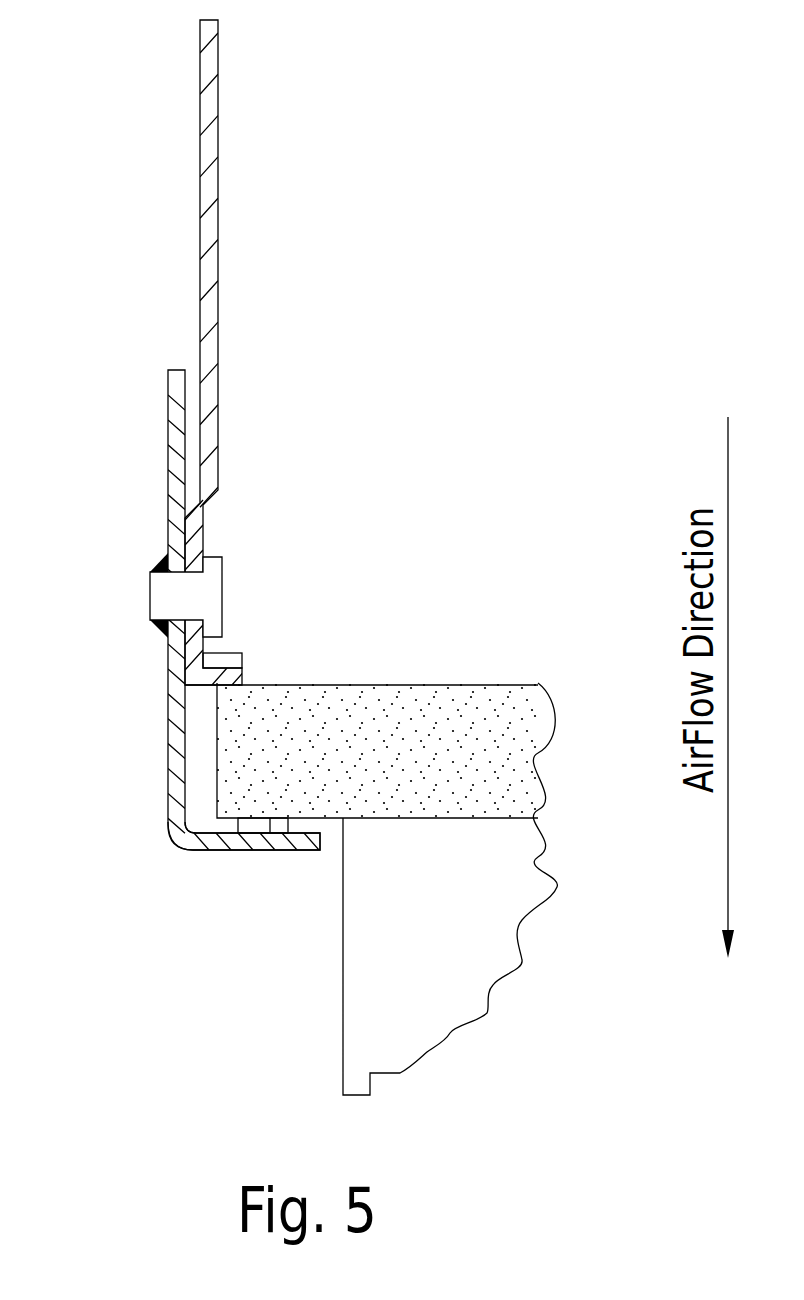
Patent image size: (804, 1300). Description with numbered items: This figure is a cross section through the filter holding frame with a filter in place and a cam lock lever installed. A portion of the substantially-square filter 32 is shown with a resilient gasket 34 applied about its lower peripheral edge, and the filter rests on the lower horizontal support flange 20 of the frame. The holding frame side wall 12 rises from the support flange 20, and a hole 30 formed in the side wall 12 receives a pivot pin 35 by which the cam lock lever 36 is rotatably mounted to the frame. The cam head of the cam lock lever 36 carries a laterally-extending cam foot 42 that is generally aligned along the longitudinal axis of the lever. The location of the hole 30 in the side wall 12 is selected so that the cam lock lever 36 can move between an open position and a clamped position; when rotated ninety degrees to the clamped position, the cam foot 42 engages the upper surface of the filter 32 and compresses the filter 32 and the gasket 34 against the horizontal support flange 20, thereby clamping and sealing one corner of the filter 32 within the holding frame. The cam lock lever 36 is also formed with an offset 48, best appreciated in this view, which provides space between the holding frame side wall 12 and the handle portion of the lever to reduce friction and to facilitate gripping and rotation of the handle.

The holding frame side wall 12 is at (187, 402).
The lower horizontal support flange 20 is at (243, 836).
The hole 30 is at (212, 587).
The filter 32 is at (480, 695).
The resilient gasket 34 is at (270, 835).
The pivot pin 35 is at (192, 600).
The cam lock lever 36 is at (232, 182).
The cam foot 42 is at (233, 660).
The offset 48 is at (208, 500).